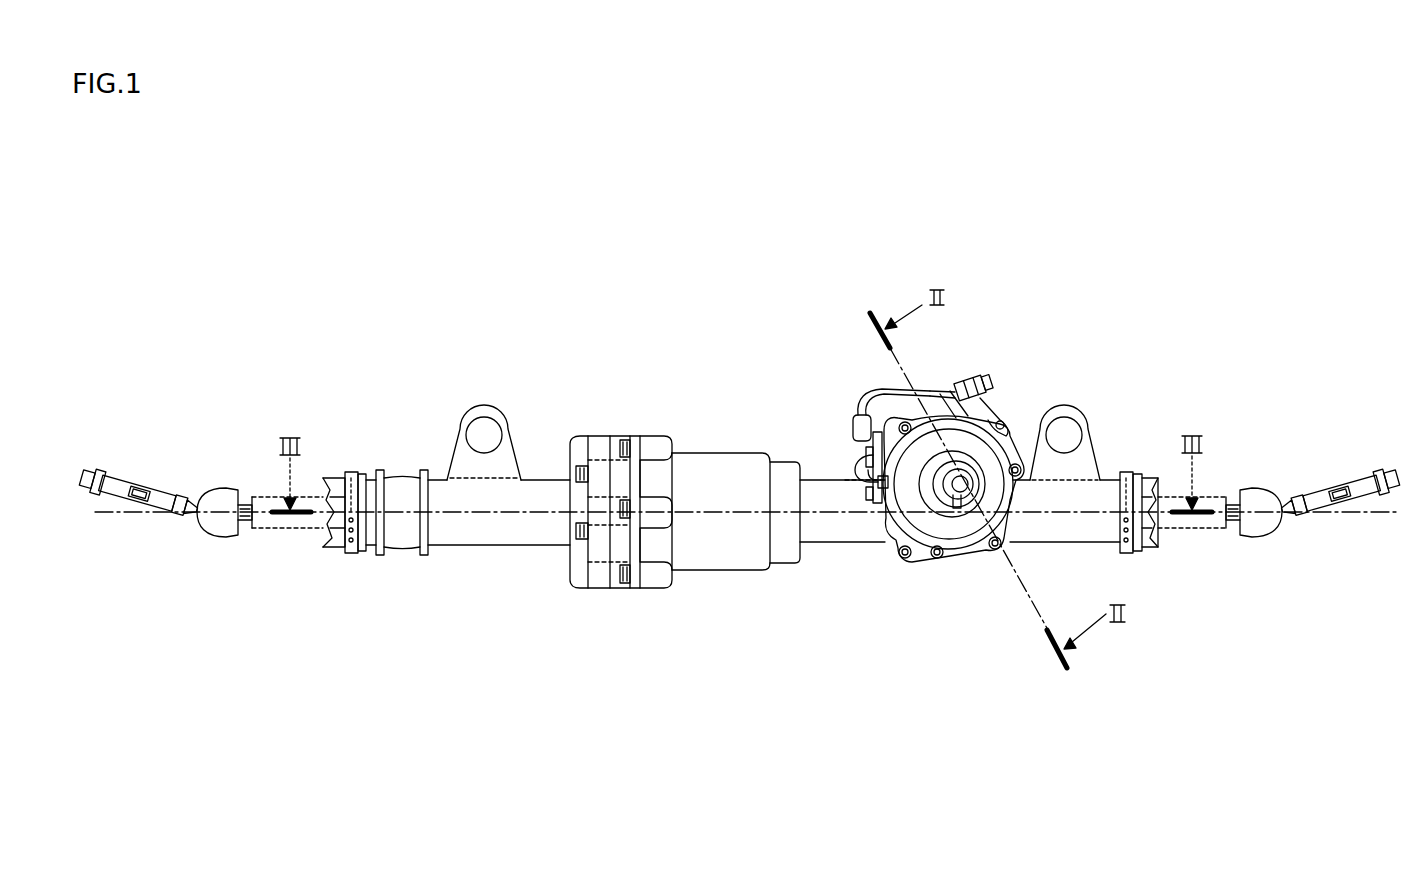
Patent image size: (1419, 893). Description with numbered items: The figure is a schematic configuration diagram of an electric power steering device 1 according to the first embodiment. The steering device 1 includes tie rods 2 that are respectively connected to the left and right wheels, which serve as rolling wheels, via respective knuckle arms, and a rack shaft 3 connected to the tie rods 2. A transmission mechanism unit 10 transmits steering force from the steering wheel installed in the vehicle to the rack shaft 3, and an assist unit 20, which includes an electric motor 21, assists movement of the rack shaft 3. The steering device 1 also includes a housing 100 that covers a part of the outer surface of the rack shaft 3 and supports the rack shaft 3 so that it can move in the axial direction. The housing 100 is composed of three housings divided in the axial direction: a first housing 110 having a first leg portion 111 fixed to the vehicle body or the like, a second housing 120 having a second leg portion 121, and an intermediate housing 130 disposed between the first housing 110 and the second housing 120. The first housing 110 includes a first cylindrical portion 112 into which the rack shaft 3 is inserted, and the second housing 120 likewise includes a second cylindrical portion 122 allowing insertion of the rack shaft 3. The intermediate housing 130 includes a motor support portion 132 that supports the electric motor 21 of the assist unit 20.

The electric power steering device 1 is at (395, 287).
The tie rods 2 is at (168, 496).
The rack shaft 3 is at (266, 498).
The transmission mechanism unit 10 is at (999, 377).
The assist unit 20 is at (731, 381).
The electric motor 21 is at (700, 452).
The housing 100 is at (793, 683).
The first housing 110 is at (832, 548).
The first leg portion 111 is at (1083, 410).
The first cylindrical portion 112 is at (820, 470).
The second housing 120 is at (552, 562).
The second leg portion 121 is at (462, 408).
The second cylindrical portion 122 is at (552, 478).
The intermediate housing 130 is at (633, 590).
The motor support portion 132 is at (630, 436).